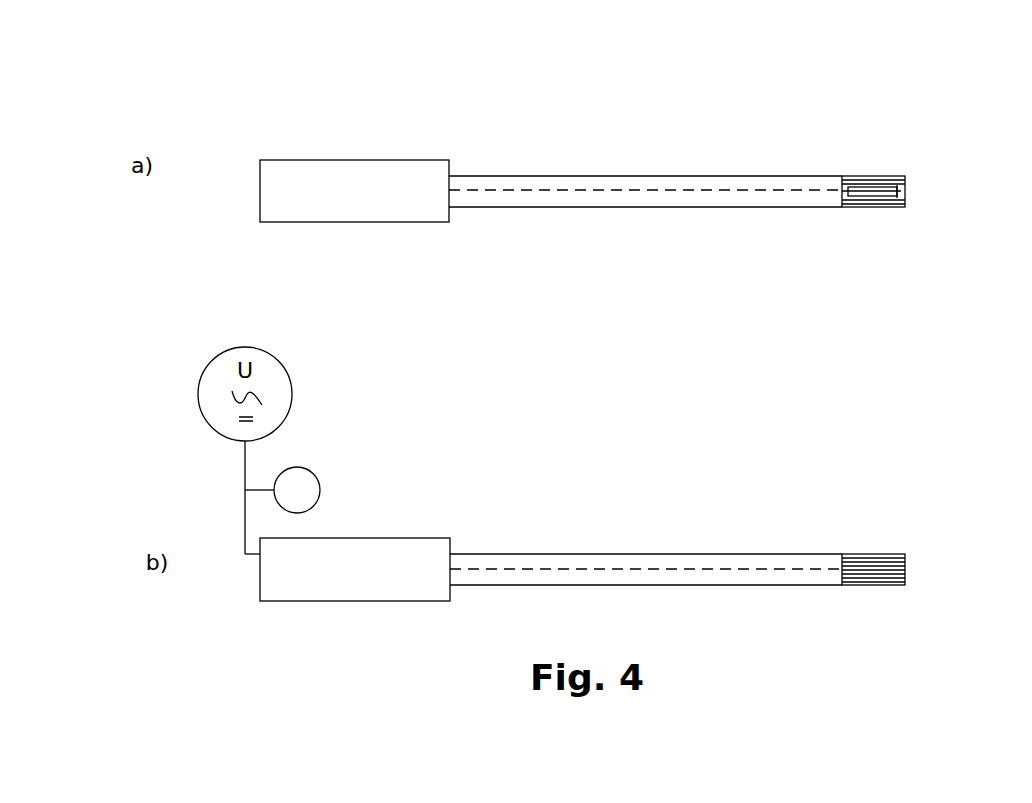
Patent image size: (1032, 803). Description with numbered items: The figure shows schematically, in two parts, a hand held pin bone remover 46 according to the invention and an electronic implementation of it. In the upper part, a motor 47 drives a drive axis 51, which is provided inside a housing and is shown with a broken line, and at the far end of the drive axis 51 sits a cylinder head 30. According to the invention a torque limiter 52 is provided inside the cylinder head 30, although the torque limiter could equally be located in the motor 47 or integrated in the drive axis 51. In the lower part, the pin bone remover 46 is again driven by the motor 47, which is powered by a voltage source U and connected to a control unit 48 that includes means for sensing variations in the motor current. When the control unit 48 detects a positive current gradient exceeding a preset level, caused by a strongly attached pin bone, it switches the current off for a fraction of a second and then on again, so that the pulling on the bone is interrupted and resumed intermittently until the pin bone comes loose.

The cylinder head 30 is at (875, 173).
The pin bone remover 46 is at (728, 496).
The motor 47 is at (277, 192).
The control unit 48 is at (303, 482).
The drive axis 51 is at (713, 188).
The torque limiter 52 is at (860, 175).